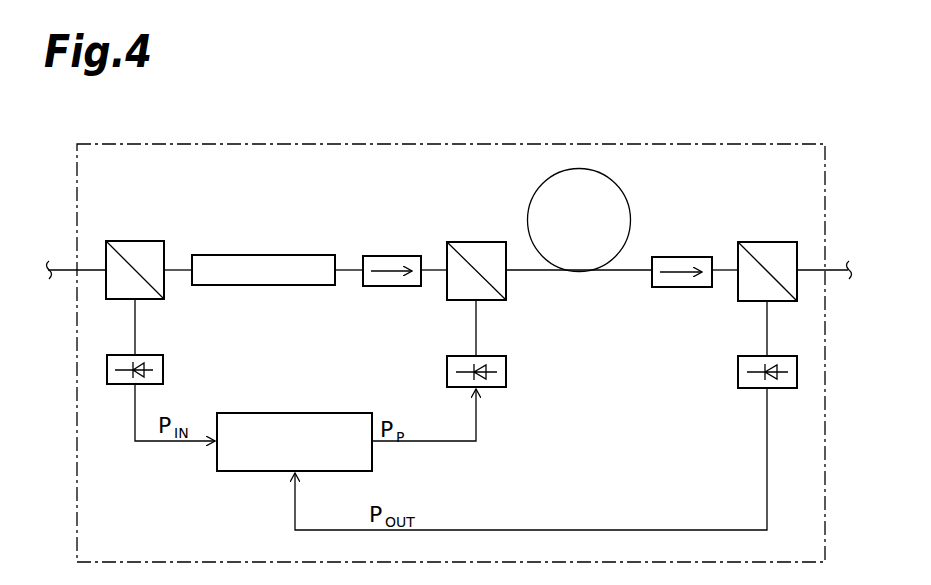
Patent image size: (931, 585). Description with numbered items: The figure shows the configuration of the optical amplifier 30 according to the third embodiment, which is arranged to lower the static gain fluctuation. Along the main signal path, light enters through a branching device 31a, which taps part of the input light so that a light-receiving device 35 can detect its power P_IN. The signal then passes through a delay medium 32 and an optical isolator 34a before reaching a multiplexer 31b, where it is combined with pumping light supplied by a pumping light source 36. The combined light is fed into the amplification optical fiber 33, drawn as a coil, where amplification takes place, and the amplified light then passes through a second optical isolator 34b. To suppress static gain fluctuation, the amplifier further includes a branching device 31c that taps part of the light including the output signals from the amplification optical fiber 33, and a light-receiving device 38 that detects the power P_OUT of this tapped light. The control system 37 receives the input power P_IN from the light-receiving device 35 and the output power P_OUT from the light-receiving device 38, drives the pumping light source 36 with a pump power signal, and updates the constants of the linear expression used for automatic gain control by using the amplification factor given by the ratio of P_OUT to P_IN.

The optical amplifier 30 is at (706, 144).
The branching device 31a is at (134, 241).
The multiplexer 31b is at (478, 242).
The branching device 31c is at (767, 242).
The delay medium 32 is at (271, 255).
The amplification optical fiber 33 is at (626, 196).
The optical isolator 34a is at (393, 256).
The optical isolator 34b is at (685, 257).
The light-receiving device 35 is at (164, 370).
The pumping light source 36 is at (507, 374).
The control system 37 is at (296, 413).
The light-receiving device 38 is at (737, 372).